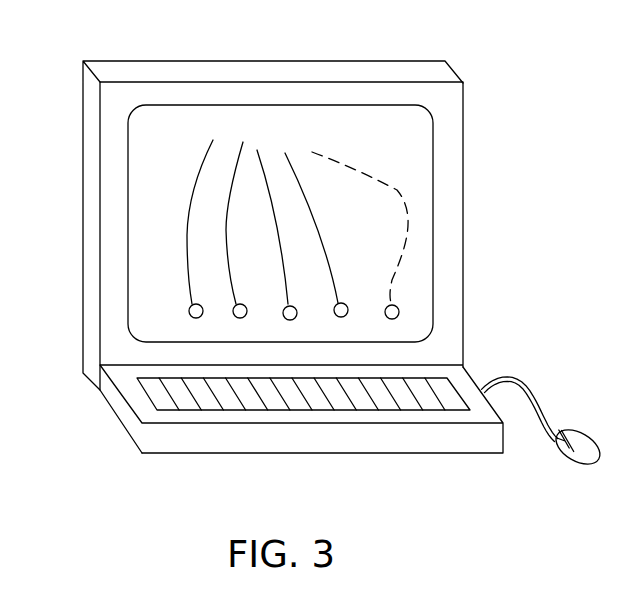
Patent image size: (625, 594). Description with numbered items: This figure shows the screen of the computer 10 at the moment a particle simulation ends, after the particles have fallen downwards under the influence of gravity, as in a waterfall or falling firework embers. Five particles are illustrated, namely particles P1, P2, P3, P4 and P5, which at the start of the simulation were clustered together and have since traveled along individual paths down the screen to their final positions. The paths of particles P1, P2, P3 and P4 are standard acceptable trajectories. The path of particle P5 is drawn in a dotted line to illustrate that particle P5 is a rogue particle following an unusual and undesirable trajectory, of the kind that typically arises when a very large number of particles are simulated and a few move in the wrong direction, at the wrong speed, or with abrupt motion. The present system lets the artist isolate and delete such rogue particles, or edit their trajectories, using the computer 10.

The computer 10 is at (83, 232).
The particle P1 is at (187, 227).
The particle P2 is at (238, 152).
The particle P3 is at (258, 156).
The particle P4 is at (300, 175).
The rogue particle P5 is at (397, 190).